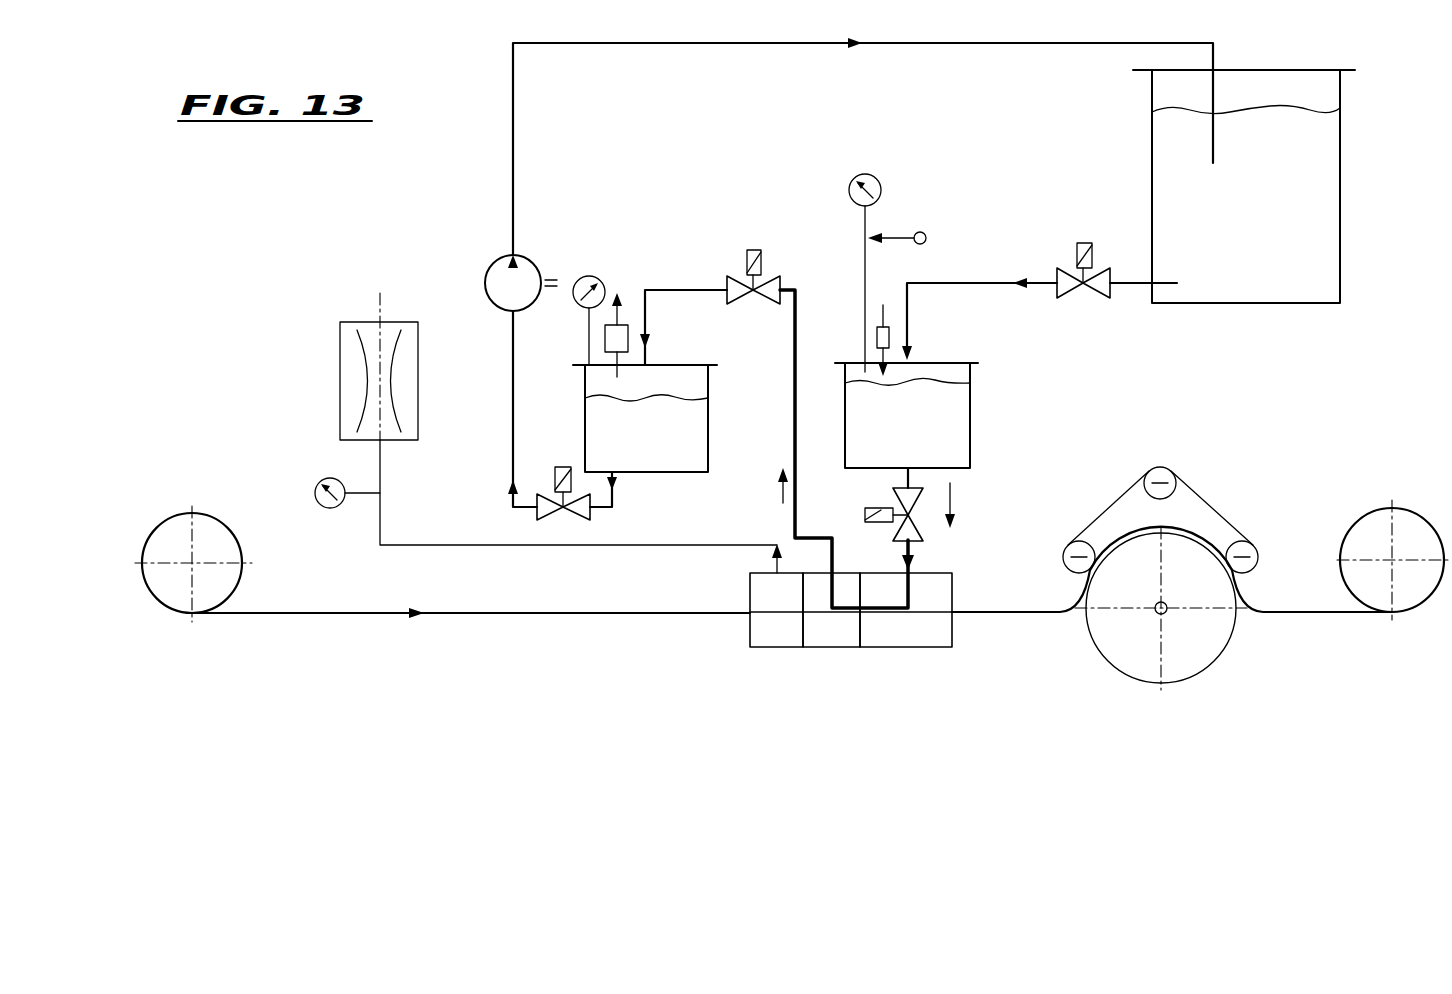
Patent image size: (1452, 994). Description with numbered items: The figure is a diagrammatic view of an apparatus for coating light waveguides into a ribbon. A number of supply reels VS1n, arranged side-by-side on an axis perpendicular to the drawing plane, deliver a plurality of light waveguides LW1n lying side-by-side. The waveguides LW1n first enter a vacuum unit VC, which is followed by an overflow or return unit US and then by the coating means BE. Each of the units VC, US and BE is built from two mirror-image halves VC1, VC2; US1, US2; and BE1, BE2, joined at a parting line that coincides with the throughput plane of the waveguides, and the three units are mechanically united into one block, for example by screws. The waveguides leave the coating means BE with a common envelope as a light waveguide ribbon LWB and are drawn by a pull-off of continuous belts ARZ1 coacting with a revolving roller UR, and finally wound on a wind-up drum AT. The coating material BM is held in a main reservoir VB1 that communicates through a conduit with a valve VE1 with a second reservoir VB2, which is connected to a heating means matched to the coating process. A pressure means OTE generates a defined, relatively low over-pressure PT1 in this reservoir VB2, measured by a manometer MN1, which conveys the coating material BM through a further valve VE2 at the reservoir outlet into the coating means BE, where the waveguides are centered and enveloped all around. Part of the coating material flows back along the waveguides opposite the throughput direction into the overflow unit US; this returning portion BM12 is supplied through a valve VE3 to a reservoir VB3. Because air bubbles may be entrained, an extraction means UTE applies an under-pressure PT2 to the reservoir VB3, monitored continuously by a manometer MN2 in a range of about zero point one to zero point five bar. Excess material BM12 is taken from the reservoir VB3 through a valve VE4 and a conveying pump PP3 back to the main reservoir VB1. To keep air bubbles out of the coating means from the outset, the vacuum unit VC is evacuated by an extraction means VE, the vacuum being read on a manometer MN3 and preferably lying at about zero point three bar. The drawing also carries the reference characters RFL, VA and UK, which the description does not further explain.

The conveying pump PP3 is at (488, 287).
The manometer MN1 is at (855, 177).
The manometer MN2 is at (577, 278).
The manometer MN3 is at (315, 498).
The valve VE1 is at (1077, 250).
The valve VE2 is at (917, 533).
The valve VE3 is at (747, 253).
The valve VE4 is at (572, 521).
The extraction means VE is at (407, 397).
The extraction means UTE is at (652, 341).
The pressure means OTE is at (877, 340).
The over-pressure PT1 is at (943, 375).
The under-pressure PT2 is at (678, 383).
The reservoir VB1 is at (1312, 233).
The second reservoir VB2 is at (962, 435).
The reservoir VB3 is at (673, 440).
The returning coating material BM12 is at (780, 492).
The coating material BM is at (950, 493).
The return flow line RFL is at (798, 512).
The vacuum connection VA is at (760, 567).
The overflow or return unit US is at (826, 651).
The half of overflow unit US1 is at (847, 635).
The half of overflow unit US2 is at (813, 587).
The coating channel UK is at (843, 589).
The coating means BE is at (927, 565).
The half of coating means BE1 is at (933, 633).
The half of coating means BE2 is at (933, 600).
The vacuum unit VC is at (776, 650).
The half of vacuum unit VC1 is at (763, 628).
The half of vacuum unit VC2 is at (773, 592).
The light waveguides LW1n is at (440, 613).
The light waveguide ribbon LWB is at (1033, 610).
The supply reels VS1n is at (210, 560).
The wind-up drum AT is at (1367, 532).
The revolving roller UR is at (1197, 658).
The continuous belts ARZ1 is at (1218, 507).